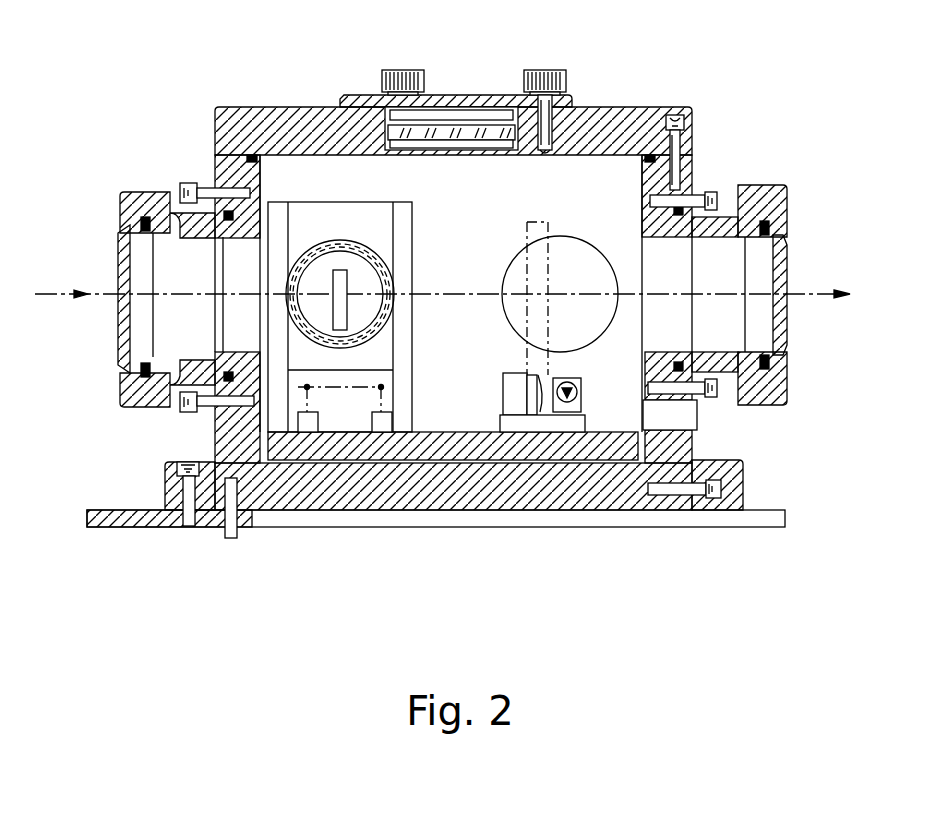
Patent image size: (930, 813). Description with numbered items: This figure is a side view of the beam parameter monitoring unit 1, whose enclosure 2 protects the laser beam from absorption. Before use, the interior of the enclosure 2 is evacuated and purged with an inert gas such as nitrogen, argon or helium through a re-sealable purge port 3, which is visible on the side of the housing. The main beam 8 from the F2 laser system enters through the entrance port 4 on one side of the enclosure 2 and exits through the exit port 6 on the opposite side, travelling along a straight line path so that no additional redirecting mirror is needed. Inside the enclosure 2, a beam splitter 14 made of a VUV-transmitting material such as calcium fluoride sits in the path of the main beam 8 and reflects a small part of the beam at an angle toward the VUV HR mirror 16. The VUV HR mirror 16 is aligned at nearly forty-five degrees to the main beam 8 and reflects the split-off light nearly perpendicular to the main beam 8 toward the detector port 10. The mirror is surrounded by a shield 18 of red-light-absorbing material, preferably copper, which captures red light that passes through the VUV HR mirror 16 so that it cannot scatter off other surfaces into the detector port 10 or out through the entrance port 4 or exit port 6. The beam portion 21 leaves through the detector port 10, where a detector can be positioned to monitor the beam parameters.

The monitoring unit 1 is at (493, 62).
The enclosure 2 is at (276, 100).
The re-sealable purge port 3 is at (680, 418).
The entrance port 4 is at (114, 259).
The exit port 6 is at (795, 247).
The main beam 8 is at (78, 303).
The detector port 10 is at (395, 259).
The beam splitter 14 is at (557, 219).
The VUV HR mirror 16 is at (335, 214).
The shield 18 is at (340, 317).
The beam portion 21 is at (352, 314).